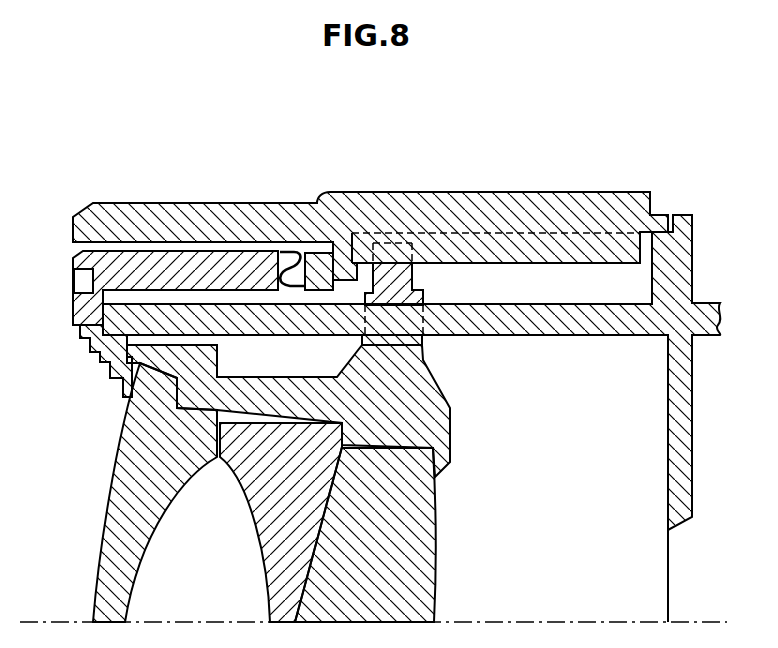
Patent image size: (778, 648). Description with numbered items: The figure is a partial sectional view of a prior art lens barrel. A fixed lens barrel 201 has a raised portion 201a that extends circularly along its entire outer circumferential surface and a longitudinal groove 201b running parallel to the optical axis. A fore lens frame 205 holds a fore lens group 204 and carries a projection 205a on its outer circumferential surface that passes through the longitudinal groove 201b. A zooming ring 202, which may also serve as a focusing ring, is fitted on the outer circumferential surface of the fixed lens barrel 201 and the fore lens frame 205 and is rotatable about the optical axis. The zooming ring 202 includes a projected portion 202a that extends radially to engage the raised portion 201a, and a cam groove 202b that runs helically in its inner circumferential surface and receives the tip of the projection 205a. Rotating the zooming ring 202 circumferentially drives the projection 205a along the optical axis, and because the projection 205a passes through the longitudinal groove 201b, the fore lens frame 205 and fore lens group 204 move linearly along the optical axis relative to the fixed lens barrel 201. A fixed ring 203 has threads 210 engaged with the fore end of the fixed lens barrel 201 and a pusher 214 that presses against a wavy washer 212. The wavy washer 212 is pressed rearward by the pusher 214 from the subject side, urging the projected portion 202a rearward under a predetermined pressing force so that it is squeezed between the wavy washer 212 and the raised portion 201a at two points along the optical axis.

The fixed lens barrel 201 is at (679, 216).
The raised portion 201a is at (344, 262).
The longitudinal groove 201b is at (527, 322).
The zooming ring 202 is at (398, 194).
The projected portion 202a is at (305, 266).
The cam groove 202b is at (478, 225).
The fixed ring 203 is at (128, 262).
The fore lens group 204 is at (437, 541).
The fore lens frame 205 is at (433, 427).
The projection 205a is at (415, 232).
The threads 210 is at (103, 353).
The wavy washer 212 is at (288, 248).
The pusher 214 is at (280, 257).